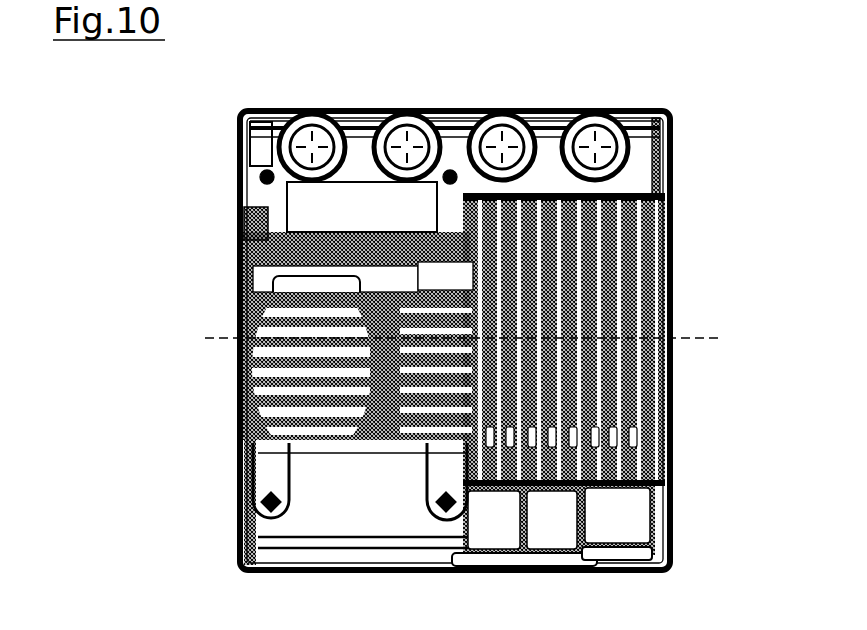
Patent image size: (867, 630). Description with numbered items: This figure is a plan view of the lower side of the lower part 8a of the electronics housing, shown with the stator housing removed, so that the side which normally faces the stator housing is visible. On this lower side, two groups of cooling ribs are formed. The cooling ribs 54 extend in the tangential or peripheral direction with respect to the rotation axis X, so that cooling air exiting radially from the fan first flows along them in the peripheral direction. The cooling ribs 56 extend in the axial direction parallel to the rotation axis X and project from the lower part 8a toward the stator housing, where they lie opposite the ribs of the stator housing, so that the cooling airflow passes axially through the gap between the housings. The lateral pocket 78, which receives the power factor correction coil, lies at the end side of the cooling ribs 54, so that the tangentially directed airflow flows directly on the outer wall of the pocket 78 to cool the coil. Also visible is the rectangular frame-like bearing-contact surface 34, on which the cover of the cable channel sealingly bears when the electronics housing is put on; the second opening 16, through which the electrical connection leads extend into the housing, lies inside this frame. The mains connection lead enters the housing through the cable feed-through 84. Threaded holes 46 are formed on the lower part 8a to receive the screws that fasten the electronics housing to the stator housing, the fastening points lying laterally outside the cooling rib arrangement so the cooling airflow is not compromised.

The lower part 8a is at (672, 523).
The second opening 16 is at (466, 280).
The cooling ribs 54 is at (673, 378).
The bearing-contact surface 34 is at (235, 258).
The cooling ribs 56 is at (235, 328).
The cable feed-through 84 is at (336, 118).
The threaded holes 46 is at (269, 170).
The lateral pocket 78 is at (553, 540).
The rotation axis X is at (716, 338).